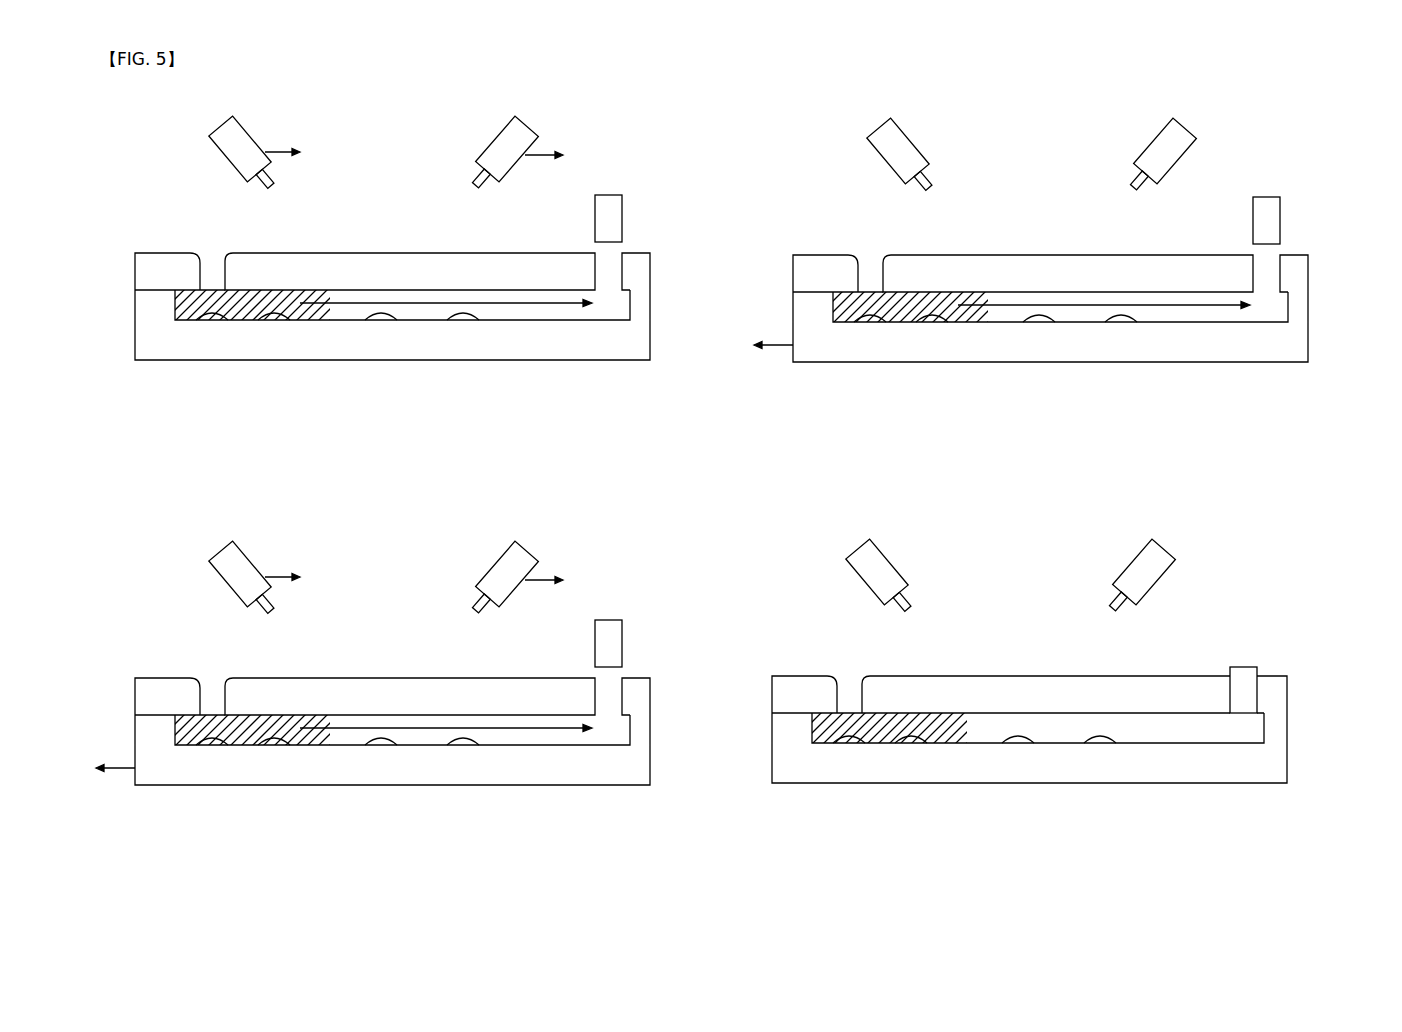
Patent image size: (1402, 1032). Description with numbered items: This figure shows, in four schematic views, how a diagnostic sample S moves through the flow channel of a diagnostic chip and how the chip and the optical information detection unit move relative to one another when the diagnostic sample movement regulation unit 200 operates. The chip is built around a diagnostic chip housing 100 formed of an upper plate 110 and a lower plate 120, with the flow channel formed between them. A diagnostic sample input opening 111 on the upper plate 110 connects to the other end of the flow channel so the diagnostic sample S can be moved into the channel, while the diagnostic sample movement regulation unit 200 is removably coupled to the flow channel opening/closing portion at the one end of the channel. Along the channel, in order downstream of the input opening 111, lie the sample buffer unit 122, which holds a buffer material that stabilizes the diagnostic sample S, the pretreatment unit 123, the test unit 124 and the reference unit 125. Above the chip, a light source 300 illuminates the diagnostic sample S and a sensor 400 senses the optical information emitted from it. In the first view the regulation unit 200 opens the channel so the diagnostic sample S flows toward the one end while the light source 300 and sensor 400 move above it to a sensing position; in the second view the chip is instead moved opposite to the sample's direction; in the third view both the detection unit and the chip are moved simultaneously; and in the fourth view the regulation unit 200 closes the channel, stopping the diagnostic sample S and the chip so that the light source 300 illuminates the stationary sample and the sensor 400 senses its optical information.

The diagnostic chip housing 100 is at (181, 159).
The upper plate 110 is at (640, 268).
The diagnostic sample input opening 111 is at (213, 280).
The lower plate 120 is at (555, 340).
The sample buffer unit 122 is at (211, 321).
The pretreatment unit 123 is at (273, 321).
The test unit 124 is at (381, 321).
The reference unit 125 is at (463, 321).
The diagnostic sample movement regulation unit 200 is at (603, 210).
The light source 300 is at (250, 143).
The sensor 400 is at (540, 135).
The diagnostic sample S is at (213, 253).